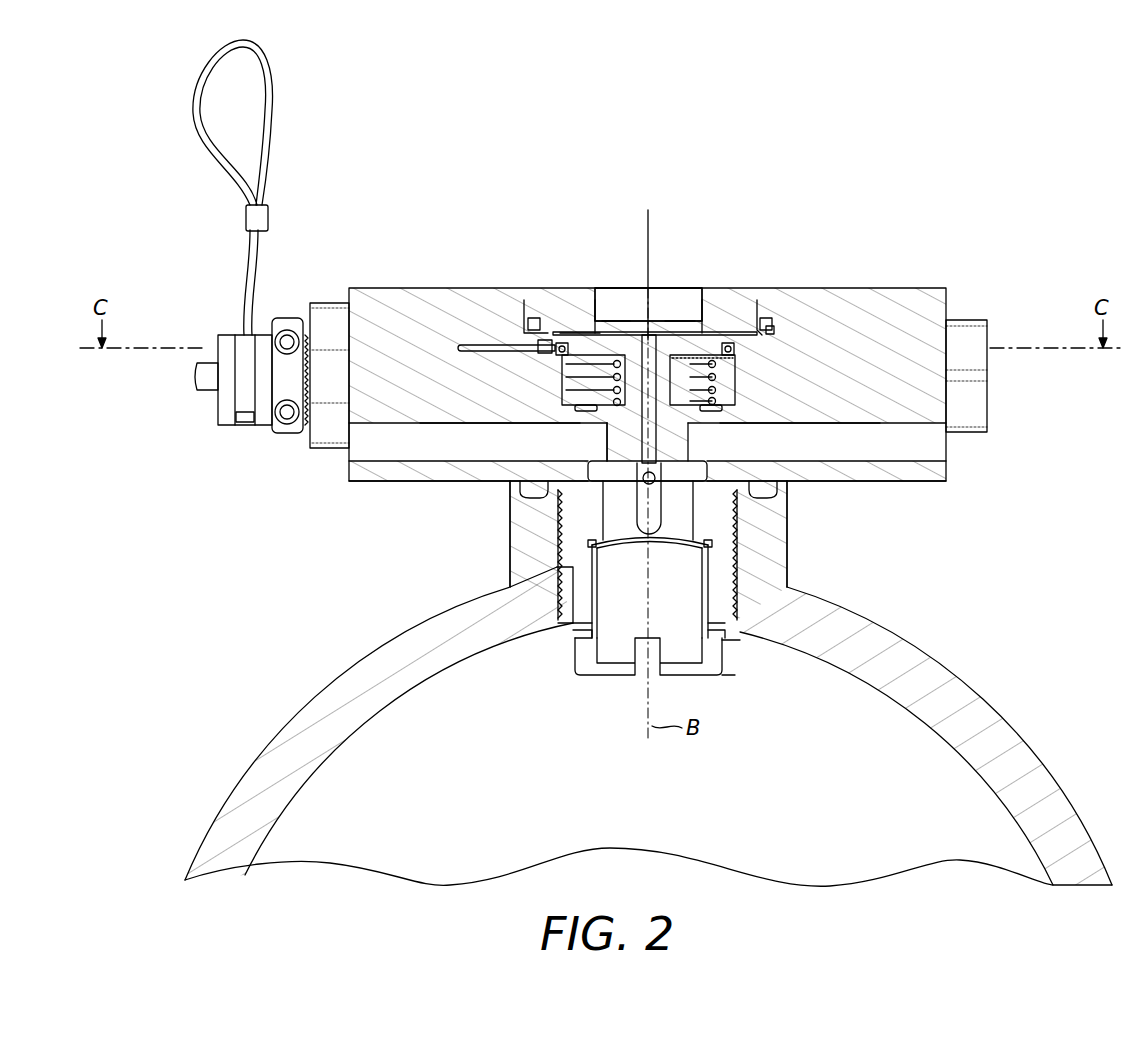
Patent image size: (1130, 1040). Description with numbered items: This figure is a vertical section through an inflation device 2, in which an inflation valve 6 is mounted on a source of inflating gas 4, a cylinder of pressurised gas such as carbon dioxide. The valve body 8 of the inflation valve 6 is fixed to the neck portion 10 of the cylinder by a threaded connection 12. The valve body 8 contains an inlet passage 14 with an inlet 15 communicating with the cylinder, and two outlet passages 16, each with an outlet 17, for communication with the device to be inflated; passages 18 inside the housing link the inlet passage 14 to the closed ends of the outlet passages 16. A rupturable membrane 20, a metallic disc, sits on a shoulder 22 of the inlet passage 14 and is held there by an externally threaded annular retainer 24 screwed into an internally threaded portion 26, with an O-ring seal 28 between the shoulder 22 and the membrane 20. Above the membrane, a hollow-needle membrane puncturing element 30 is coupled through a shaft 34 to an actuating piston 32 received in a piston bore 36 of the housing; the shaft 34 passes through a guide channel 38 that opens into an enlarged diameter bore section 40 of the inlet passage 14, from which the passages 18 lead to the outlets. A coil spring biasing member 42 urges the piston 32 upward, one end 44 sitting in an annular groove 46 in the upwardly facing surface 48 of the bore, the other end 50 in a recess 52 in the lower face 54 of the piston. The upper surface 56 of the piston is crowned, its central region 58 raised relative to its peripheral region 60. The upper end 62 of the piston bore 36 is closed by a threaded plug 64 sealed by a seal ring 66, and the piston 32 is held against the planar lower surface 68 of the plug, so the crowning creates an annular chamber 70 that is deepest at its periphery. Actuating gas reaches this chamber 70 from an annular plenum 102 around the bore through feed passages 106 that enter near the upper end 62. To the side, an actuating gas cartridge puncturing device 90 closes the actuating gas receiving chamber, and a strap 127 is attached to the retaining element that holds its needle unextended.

The inflation device 2 is at (1085, 240).
The source of inflating gas 4 is at (1012, 742).
The inflation valve 6 is at (932, 275).
The valve body 8 is at (942, 470).
The neck portion 10 is at (776, 538).
The threaded connection 12 is at (740, 574).
The inlet passage 14 is at (694, 503).
The inlet 15 is at (618, 652).
The outlet passage 16 is at (432, 450).
The outlet 17 is at (349, 455).
The passages 18 is at (582, 458).
The rupturable membrane 20 is at (628, 550).
The shoulder 22 is at (556, 527).
The externally threaded annular retainer 24 is at (712, 663).
The internally threaded portion 26 is at (575, 628).
The seal 28 is at (556, 568).
The membrane puncturing element 30 is at (656, 520).
The actuating piston 32 is at (696, 330).
The shaft 34 is at (660, 330).
The piston bore 36 is at (562, 376).
The guide channel 38 is at (688, 441).
The enlarged diameter bore section 40 is at (542, 494).
The biasing member 42 is at (735, 386).
The one end of the spring 44 is at (735, 405).
The annular groove 46 is at (740, 411).
The upwardly facing surface 48 is at (600, 411).
The other end of the spring 50 is at (737, 362).
The recess 52 is at (612, 322).
The lower face 54 is at (640, 322).
The upper surface 56 is at (708, 328).
The central region 58 is at (664, 322).
The peripheral region 60 is at (586, 330).
The upper end 62 is at (653, 264).
The plug 64 is at (757, 325).
The seal ring 66 is at (776, 332).
The lower surface 68 is at (525, 330).
The annular chamber 70 is at (592, 326).
The actuating gas cartridge puncturing device 90 is at (262, 462).
The annular plenum 102 is at (540, 345).
The feed passages 106 is at (535, 330).
The strap 127 is at (270, 88).